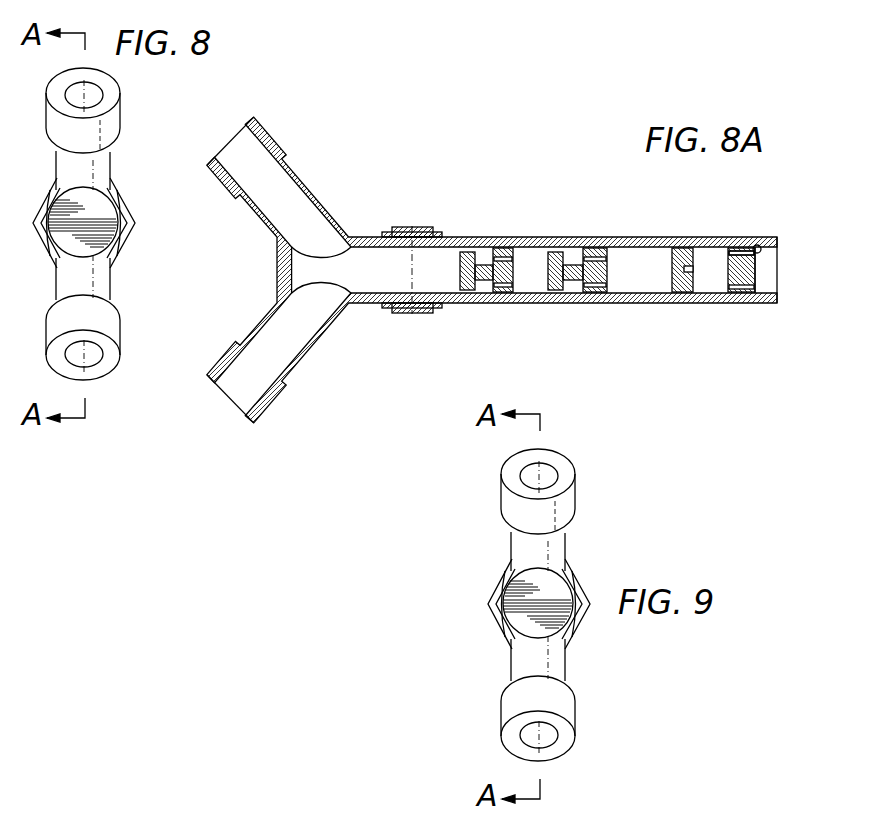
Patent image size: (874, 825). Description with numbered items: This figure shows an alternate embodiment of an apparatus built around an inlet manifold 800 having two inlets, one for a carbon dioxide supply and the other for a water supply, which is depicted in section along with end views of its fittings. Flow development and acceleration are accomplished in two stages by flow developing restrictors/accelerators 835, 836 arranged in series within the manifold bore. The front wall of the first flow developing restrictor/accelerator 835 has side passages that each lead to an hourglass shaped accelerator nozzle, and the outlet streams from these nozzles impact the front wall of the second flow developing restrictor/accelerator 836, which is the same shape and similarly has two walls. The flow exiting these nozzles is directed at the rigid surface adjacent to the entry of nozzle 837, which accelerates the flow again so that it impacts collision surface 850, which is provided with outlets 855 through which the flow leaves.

The inlet manifold 800 is at (456, 207).
The flow developing restrictor/accelerator 835 is at (502, 247).
The flow developing restrictor/accelerator 836 is at (603, 247).
The nozzle 837 is at (680, 248).
The collision surface 850 is at (727, 272).
The outlets 855 is at (757, 245).